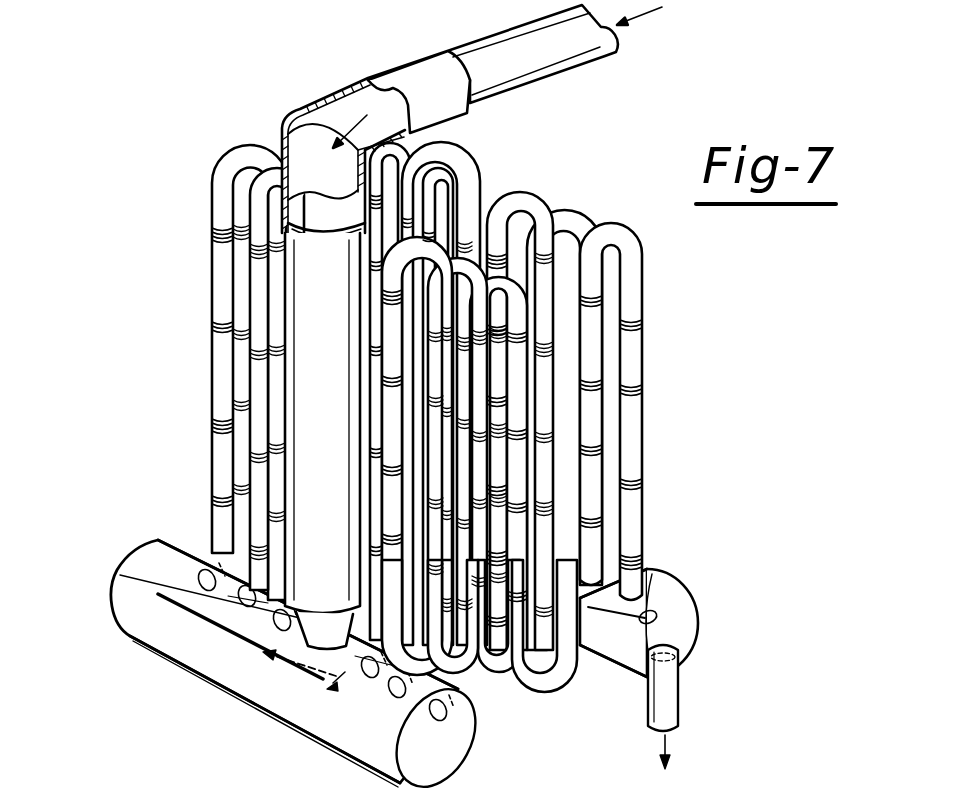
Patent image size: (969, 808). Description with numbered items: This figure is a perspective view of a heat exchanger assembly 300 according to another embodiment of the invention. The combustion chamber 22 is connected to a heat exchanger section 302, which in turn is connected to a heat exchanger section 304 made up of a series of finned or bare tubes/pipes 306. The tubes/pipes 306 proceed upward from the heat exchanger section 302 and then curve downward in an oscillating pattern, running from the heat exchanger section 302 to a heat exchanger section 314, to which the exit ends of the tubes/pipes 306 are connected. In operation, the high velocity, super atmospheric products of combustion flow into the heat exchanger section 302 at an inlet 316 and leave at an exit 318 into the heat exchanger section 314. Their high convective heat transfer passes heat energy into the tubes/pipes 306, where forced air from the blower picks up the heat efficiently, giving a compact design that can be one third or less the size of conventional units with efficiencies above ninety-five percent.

The heat exchanger assembly 300 is at (237, 128).
The combustion chamber 22 is at (330, 385).
The heat exchanger section 302 is at (140, 611).
The heat exchanger section 304 is at (445, 399).
The finned or bare tubes/pipes 306 is at (233, 169).
The heat exchanger section 314 is at (682, 619).
The inlet 316 is at (345, 672).
The exit 318 is at (680, 612).